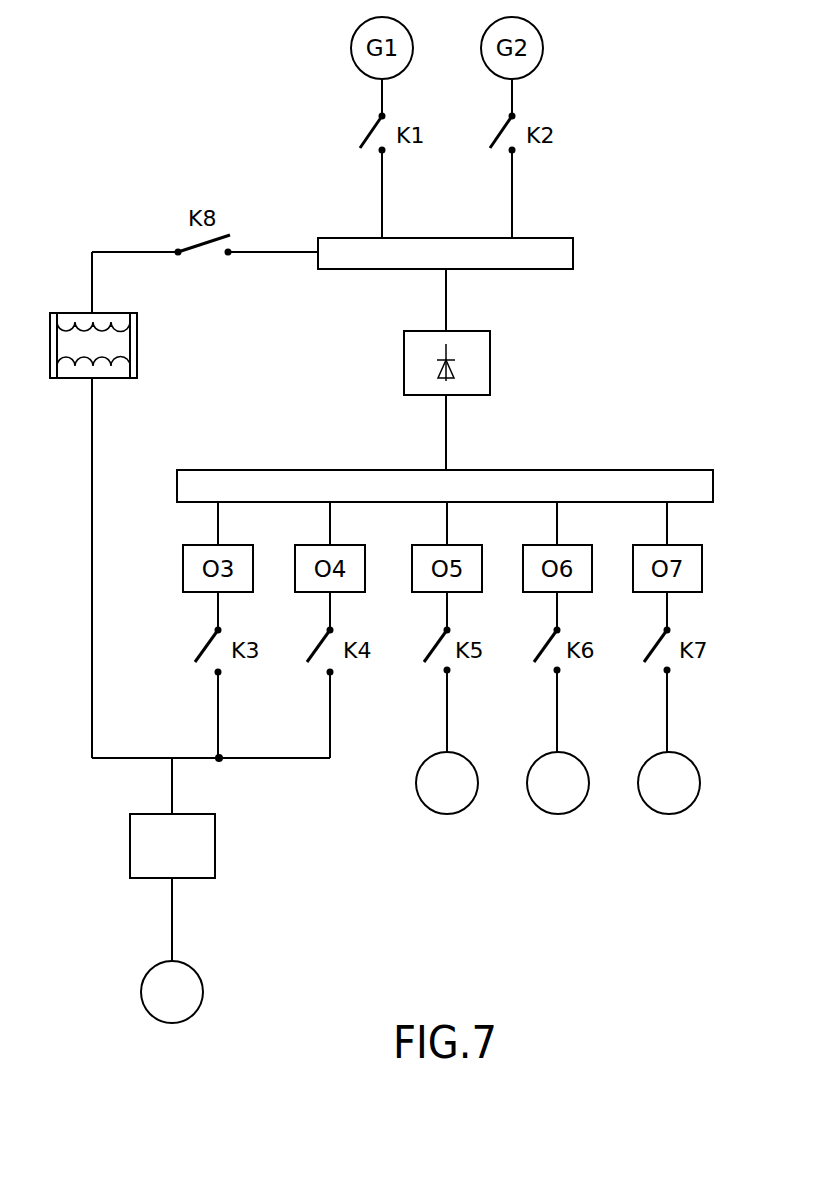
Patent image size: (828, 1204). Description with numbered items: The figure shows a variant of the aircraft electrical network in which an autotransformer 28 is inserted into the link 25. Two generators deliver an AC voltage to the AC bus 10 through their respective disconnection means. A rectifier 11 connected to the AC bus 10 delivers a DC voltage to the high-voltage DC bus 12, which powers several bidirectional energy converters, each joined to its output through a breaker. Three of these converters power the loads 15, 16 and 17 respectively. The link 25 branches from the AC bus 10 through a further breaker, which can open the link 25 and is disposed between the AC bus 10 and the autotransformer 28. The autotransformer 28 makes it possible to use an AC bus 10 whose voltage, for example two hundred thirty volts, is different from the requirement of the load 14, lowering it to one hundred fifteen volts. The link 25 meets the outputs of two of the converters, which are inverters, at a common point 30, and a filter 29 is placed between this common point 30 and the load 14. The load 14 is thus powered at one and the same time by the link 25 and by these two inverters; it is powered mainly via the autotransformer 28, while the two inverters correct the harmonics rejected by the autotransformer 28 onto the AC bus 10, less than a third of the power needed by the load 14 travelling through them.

The AC bus 10 is at (573, 251).
The rectifier 11 is at (490, 363).
The high-voltage DC bus 12 is at (553, 470).
The load 14 is at (172, 950).
The load 15 is at (447, 742).
The load 16 is at (558, 742).
The load 17 is at (669, 742).
The link 25 is at (92, 477).
The autotransformer 28 is at (137, 353).
The filter 29 is at (215, 845).
The common point 30 is at (219, 758).